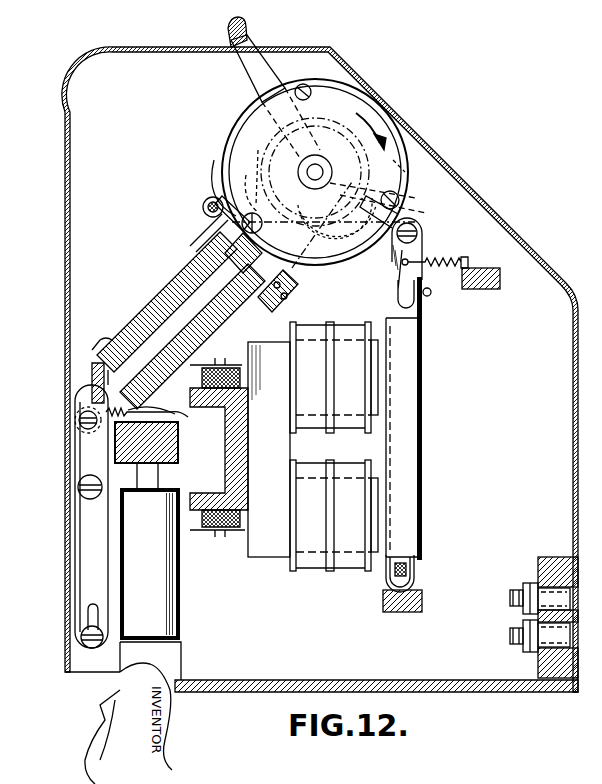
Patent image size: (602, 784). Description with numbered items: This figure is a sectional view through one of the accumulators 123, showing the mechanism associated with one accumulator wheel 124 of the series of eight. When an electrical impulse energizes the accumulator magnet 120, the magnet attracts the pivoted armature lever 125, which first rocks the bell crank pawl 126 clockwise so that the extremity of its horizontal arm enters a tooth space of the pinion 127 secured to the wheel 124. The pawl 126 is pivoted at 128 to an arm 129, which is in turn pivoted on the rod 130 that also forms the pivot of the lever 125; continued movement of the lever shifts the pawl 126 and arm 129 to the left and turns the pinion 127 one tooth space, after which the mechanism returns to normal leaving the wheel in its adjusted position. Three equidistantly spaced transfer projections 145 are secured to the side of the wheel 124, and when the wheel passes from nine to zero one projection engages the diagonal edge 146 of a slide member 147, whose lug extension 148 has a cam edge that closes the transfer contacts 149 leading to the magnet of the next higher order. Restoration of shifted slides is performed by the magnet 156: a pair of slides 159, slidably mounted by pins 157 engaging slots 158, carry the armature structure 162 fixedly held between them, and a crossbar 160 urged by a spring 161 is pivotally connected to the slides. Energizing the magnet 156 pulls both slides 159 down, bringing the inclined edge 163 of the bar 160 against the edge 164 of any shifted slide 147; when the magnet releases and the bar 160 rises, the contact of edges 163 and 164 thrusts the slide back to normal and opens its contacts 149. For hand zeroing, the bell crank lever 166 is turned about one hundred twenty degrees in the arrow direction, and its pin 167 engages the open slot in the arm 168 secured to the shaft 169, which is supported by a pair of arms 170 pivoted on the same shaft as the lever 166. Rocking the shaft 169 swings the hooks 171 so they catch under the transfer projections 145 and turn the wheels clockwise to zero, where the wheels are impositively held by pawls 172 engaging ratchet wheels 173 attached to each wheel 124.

The accumulator magnet 120 is at (352, 548).
The accumulator 123 is at (516, 214).
The accumulator wheel 124 is at (405, 155).
The armature lever 125 is at (408, 470).
The bell crank pawl 126 is at (410, 254).
The pinion 127 is at (405, 182).
The pivot 128 is at (413, 239).
The arm 129 is at (414, 284).
The rod 130 is at (410, 576).
The transfer projection 145 is at (396, 212).
The diagonal edge 146 is at (263, 243).
The slide member 147 is at (232, 275).
The lug extension 148 is at (199, 263).
The transfer contacts 149 is at (208, 241).
The magnet 156 is at (178, 612).
The pins 157 is at (75, 422).
The slots 158 is at (93, 608).
The slides 159 is at (100, 560).
The crossbar 160 is at (98, 366).
The spring 161 is at (172, 416).
The armature structure 162 is at (178, 455).
The inclined edge 163 is at (146, 366).
The edge 164 is at (137, 476).
The bell crank lever 166 is at (246, 33).
The pin 167 is at (245, 185).
The arm 168 is at (263, 174).
The shaft 169 is at (207, 200).
The arms 170 is at (217, 181).
The hooks 171 is at (274, 223).
The pawls 172 is at (333, 238).
The ratchet wheels 173 is at (420, 196).